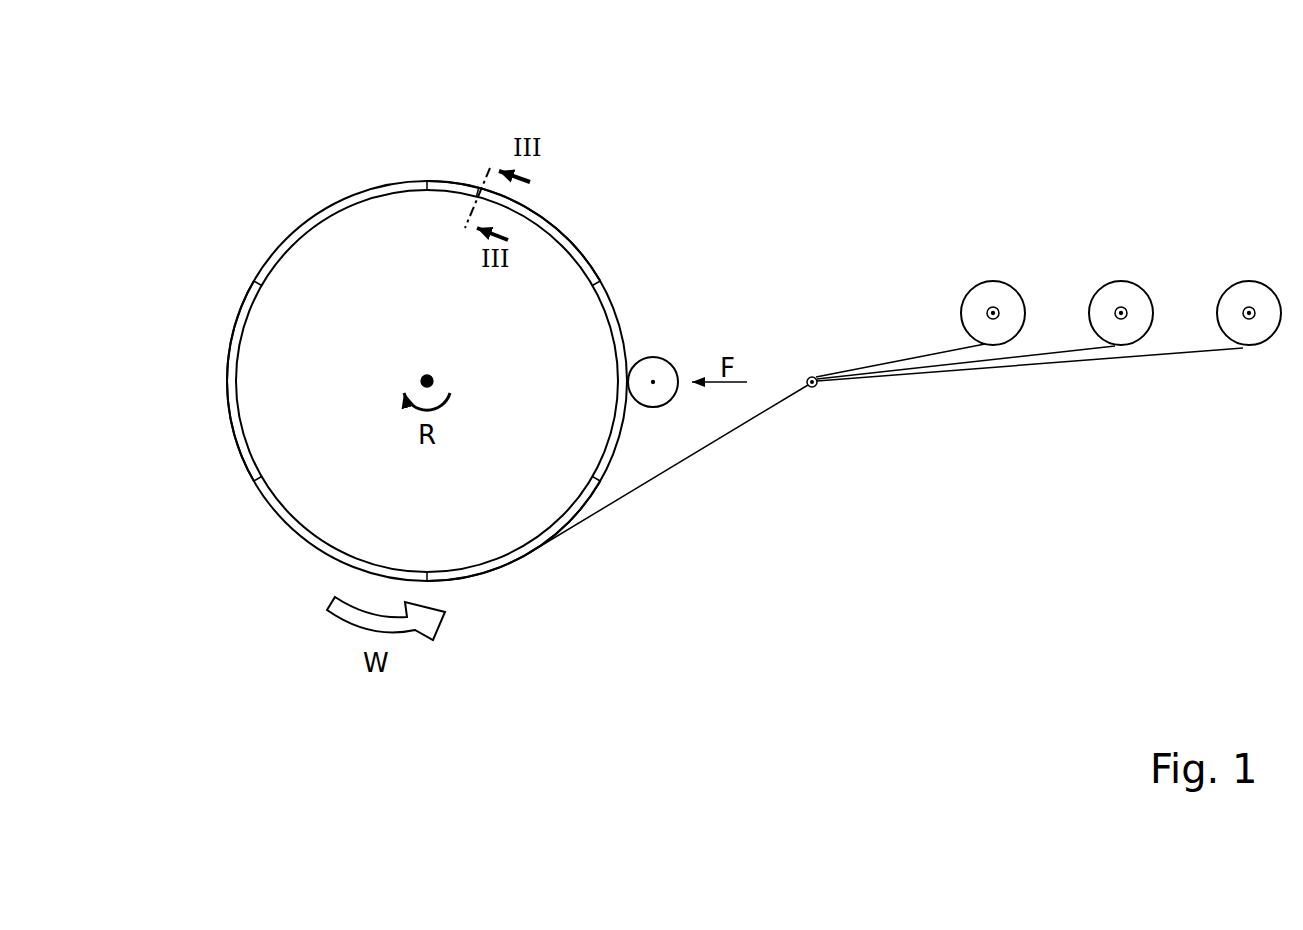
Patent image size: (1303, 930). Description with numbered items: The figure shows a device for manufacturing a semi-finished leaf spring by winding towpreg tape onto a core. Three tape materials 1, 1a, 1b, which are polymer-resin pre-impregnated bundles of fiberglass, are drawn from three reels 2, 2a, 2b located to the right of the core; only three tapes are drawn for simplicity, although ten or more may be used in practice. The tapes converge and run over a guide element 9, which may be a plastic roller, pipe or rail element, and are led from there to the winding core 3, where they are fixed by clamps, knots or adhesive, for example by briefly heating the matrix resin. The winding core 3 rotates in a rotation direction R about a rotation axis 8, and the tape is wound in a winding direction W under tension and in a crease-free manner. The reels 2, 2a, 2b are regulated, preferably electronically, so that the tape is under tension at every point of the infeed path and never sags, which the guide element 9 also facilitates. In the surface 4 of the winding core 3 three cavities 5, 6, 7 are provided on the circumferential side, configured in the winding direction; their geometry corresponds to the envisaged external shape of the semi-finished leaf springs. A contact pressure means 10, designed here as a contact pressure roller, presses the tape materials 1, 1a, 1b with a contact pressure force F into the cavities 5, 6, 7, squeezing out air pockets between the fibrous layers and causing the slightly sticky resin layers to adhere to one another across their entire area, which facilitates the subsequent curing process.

The tape material 1 is at (927, 362).
The tape material 1a is at (1050, 355).
The tape material 1b is at (1160, 357).
The reel 2 is at (967, 282).
The reel 2a is at (1104, 278).
The reel 2b is at (1235, 278).
The winding core 3 is at (313, 192).
The surface 4 is at (367, 187).
The cavity 5 is at (502, 563).
The cavity 6 is at (540, 218).
The cavity 7 is at (237, 442).
The rotation axis 8 is at (427, 368).
The guide element 9 is at (813, 392).
The contact pressure means 10 is at (670, 353).